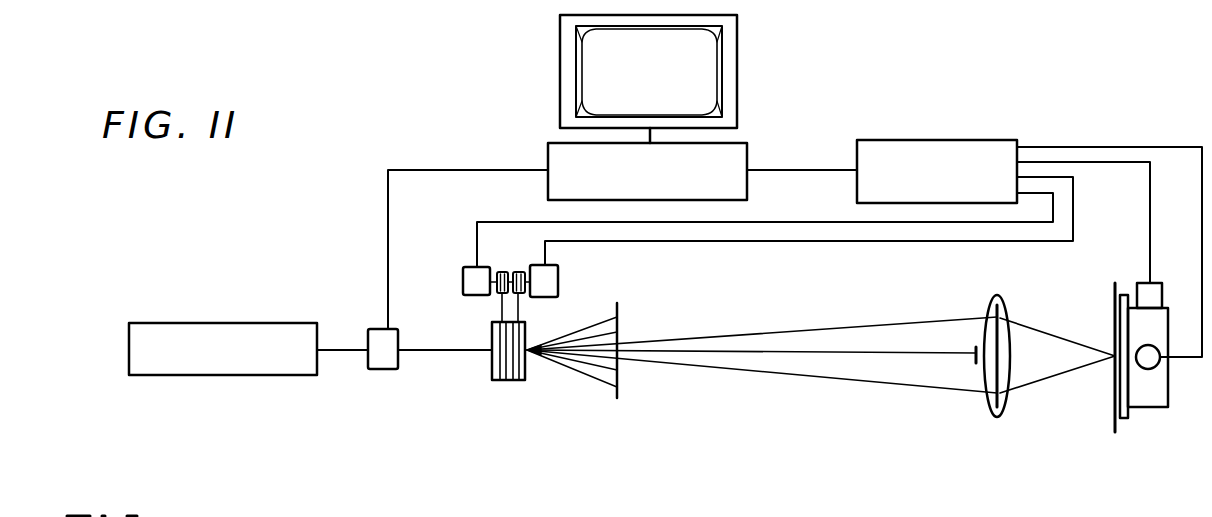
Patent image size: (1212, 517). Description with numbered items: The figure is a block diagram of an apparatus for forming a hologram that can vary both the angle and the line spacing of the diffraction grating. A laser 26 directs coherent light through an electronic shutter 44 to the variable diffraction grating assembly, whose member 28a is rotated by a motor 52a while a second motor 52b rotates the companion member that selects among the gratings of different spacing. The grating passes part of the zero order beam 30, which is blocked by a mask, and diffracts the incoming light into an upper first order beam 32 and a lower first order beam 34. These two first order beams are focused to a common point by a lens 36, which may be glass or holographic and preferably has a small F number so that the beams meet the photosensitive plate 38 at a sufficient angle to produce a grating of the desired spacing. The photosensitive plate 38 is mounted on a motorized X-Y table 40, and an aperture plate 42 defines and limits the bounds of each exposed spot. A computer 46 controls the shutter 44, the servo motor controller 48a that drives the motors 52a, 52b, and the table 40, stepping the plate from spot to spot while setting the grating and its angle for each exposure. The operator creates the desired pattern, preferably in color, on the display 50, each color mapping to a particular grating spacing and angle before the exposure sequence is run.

The laser 26 is at (223, 349).
The electronic shutter 44 is at (374, 332).
The rotatable member 28a is at (492, 323).
The motor 52a is at (472, 279).
The motor 52b is at (548, 281).
The upper first order beam 32 is at (843, 327).
The zero order beam 30 is at (874, 353).
The lower first order beam 34 is at (777, 372).
The lens 36 is at (1002, 302).
The aperture plate 42 is at (1111, 292).
The photosensitive plate 38 is at (1117, 398).
The motorized X-Y table 40 is at (1161, 396).
The computer 46 is at (647, 171).
The servo motor controller 48a is at (937, 171).
The display 50 is at (707, 85).